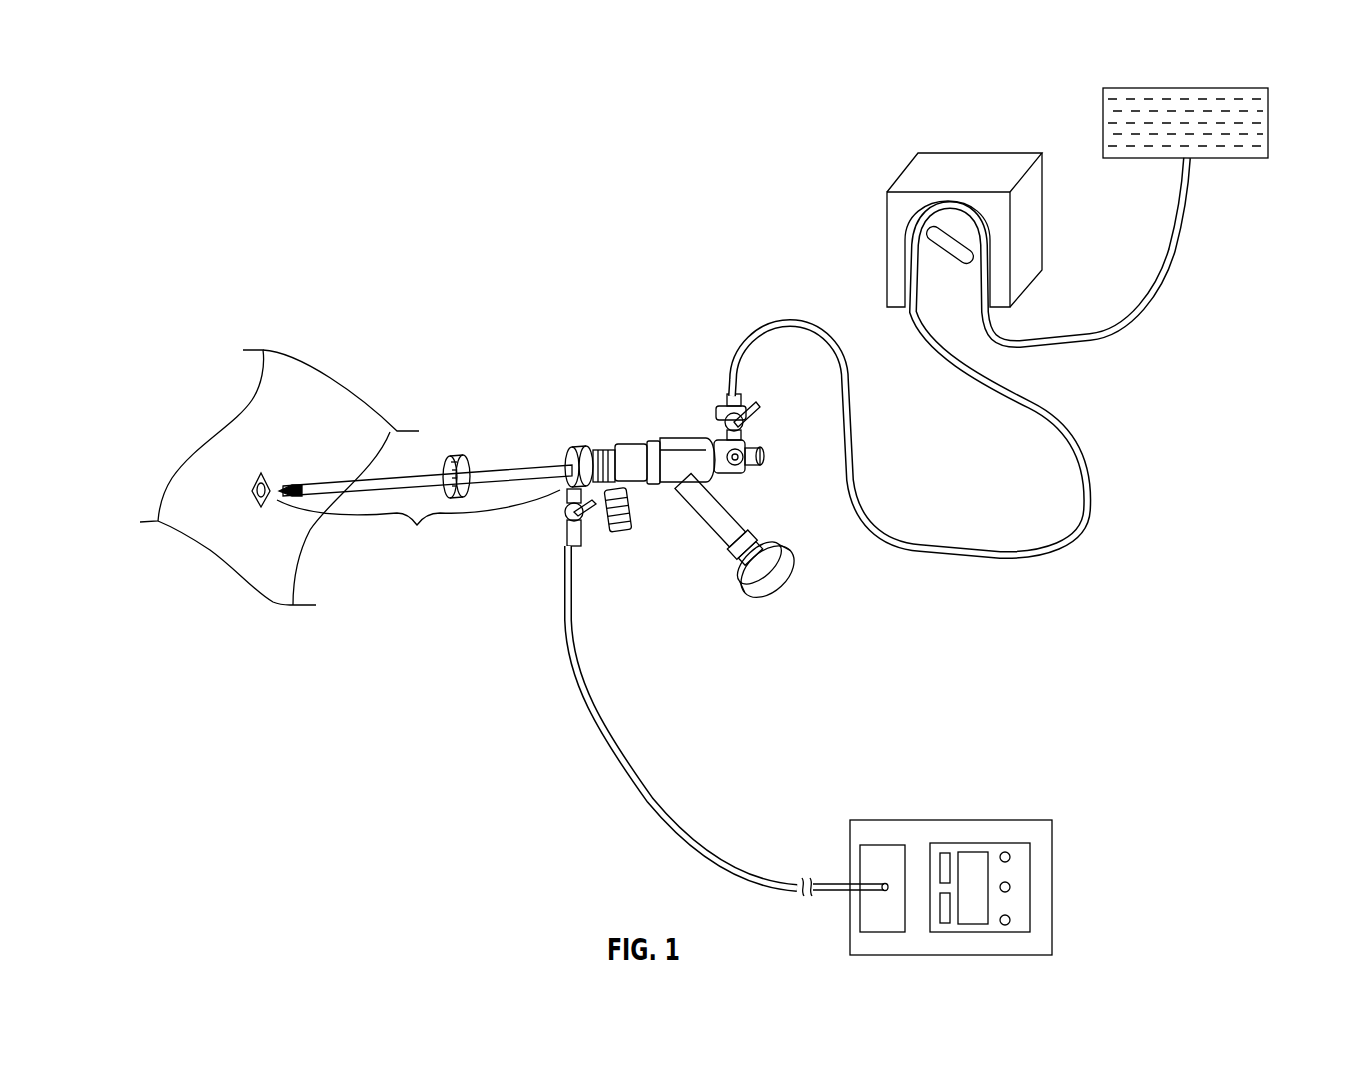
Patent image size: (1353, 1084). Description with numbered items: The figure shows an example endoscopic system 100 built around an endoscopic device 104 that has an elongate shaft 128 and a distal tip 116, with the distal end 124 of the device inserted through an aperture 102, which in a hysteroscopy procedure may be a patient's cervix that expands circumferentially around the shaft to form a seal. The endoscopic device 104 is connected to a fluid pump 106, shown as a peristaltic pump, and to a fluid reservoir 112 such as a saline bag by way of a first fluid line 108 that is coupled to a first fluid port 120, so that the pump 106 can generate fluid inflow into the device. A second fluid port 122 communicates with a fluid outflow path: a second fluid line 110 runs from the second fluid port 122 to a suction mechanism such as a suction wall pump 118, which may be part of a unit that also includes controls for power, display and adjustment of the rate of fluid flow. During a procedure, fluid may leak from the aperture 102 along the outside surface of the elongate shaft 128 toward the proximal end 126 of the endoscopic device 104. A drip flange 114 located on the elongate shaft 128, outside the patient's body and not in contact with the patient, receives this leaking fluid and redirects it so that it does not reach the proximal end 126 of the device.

The endoscopic system 100 is at (165, 75).
The aperture 102 is at (248, 434).
The endoscopic device 104 is at (540, 484).
The fluid pump 106 is at (965, 165).
The first fluid line 108 is at (970, 543).
The second fluid line 110 is at (705, 848).
The fluid reservoir 112 is at (1240, 68).
The drip flange 114 is at (456, 455).
The distal tip 116 is at (673, 647).
The suction wall pump 118 is at (884, 845).
The first fluid port 120 is at (728, 368).
The second fluid port 122 is at (555, 507).
The distal end 124 is at (273, 503).
The proximal end 126 is at (760, 480).
The elongate shaft 128 is at (424, 515).